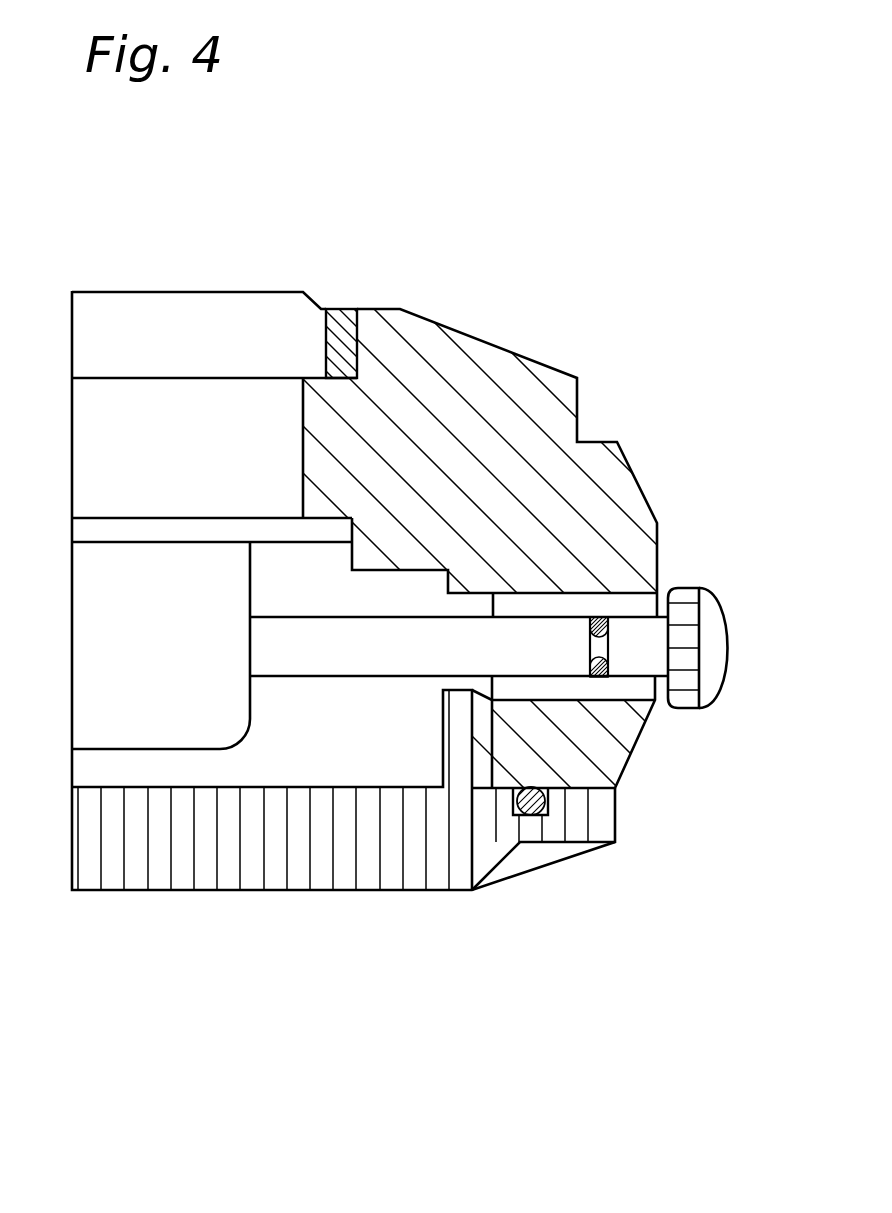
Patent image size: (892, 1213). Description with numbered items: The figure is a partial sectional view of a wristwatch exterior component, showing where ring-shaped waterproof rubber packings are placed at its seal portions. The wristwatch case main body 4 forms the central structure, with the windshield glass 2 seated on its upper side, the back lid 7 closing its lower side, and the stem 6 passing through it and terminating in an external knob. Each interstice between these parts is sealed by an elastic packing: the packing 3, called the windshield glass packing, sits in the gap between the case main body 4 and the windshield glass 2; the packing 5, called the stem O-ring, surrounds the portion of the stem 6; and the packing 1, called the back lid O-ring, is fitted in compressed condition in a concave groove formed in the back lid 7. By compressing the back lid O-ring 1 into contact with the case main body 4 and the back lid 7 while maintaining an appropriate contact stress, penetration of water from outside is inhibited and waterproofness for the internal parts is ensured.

The back lid O-ring 1 is at (532, 802).
The windshield glass 2 is at (148, 305).
The windshield glass packing 3 is at (338, 313).
The wristwatch case main body 4 is at (478, 425).
The stem O-ring 5 is at (598, 617).
The stem 6 is at (713, 650).
The back lid 7 is at (233, 862).